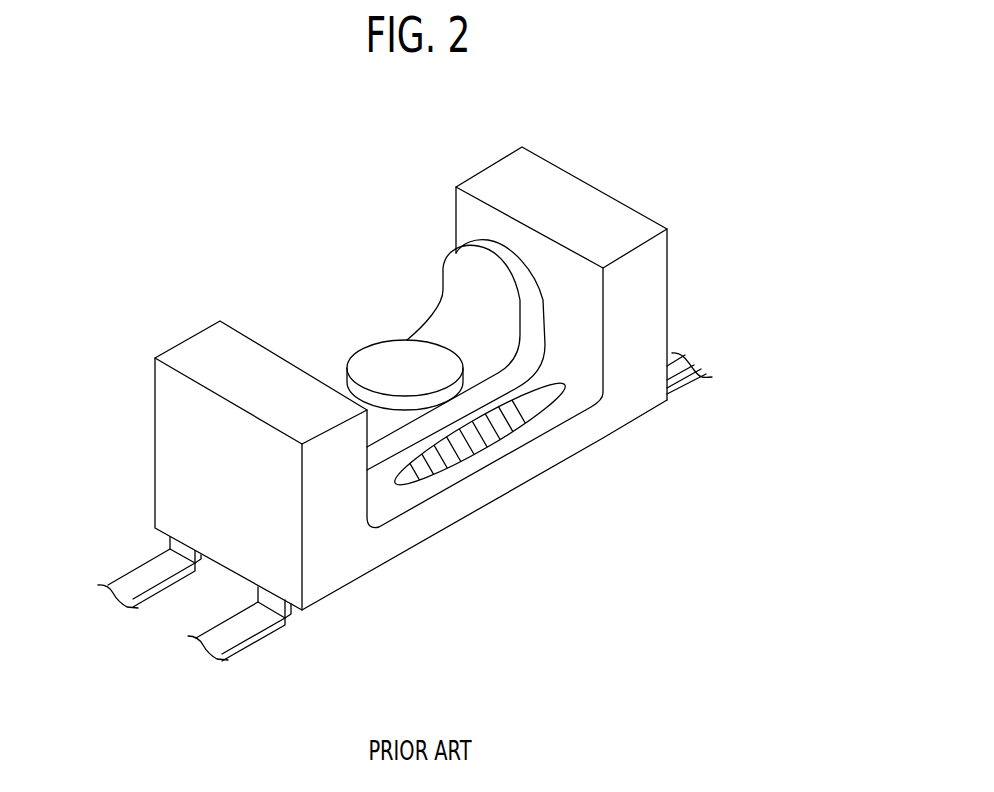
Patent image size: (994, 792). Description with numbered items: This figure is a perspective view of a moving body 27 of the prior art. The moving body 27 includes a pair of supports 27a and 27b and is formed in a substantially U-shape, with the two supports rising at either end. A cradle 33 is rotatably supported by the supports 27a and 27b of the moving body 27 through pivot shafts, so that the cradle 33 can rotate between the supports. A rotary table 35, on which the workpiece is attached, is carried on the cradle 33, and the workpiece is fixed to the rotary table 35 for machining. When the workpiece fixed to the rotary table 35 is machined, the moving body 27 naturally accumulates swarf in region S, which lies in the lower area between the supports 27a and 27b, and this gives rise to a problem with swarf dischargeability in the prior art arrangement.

The moving body 27 is at (437, 413).
The support 27a is at (323, 463).
The support 27b is at (641, 287).
The cradle 33 is at (461, 314).
The rotary table 35 is at (380, 363).
The region S is at (478, 448).